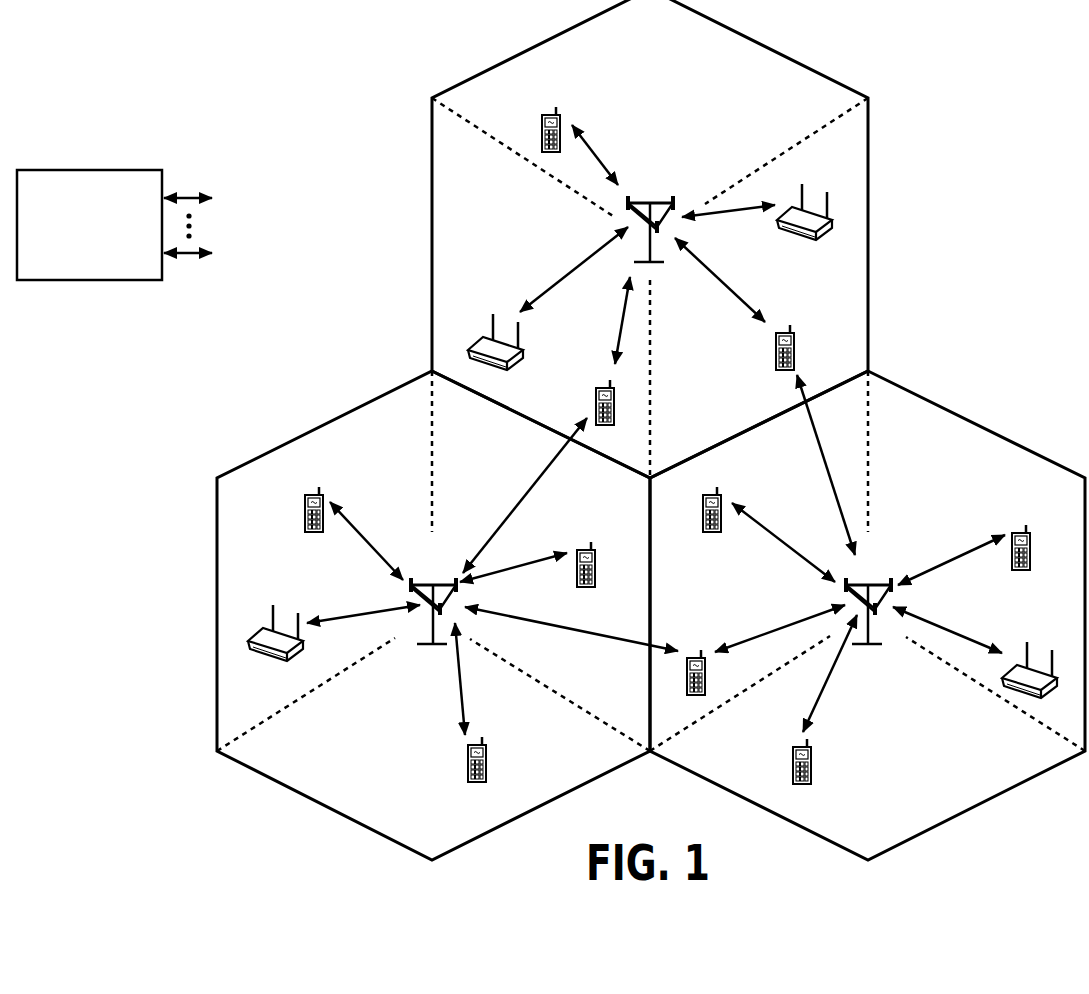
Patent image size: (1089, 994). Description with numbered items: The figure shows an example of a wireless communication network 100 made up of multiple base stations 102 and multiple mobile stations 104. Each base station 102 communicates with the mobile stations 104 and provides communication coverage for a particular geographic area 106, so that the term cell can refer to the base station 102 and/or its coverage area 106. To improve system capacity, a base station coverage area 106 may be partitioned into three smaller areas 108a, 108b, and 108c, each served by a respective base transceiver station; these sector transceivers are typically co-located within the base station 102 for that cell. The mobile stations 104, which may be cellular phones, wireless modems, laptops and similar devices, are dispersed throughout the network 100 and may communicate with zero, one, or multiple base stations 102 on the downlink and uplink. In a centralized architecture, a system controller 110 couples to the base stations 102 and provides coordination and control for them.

The wireless communication network 100 is at (1019, 59).
The base station 102 is at (640, 200).
The mobile station 104 is at (540, 123).
The geographic area 106 is at (763, 43).
The smaller area 108a is at (630, 50).
The smaller area 108b is at (448, 203).
The smaller area 108c is at (704, 411).
The system controller 110 is at (85, 170).